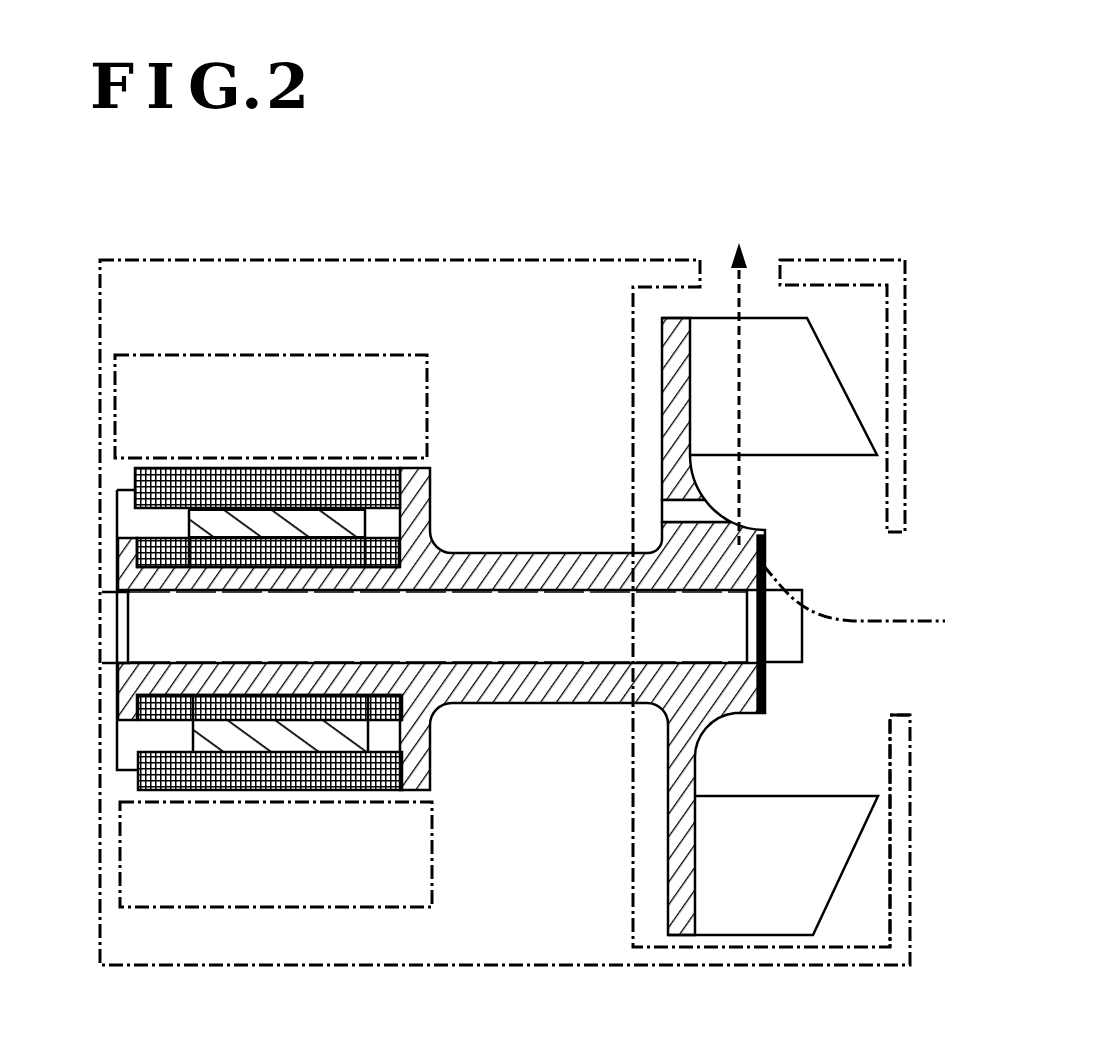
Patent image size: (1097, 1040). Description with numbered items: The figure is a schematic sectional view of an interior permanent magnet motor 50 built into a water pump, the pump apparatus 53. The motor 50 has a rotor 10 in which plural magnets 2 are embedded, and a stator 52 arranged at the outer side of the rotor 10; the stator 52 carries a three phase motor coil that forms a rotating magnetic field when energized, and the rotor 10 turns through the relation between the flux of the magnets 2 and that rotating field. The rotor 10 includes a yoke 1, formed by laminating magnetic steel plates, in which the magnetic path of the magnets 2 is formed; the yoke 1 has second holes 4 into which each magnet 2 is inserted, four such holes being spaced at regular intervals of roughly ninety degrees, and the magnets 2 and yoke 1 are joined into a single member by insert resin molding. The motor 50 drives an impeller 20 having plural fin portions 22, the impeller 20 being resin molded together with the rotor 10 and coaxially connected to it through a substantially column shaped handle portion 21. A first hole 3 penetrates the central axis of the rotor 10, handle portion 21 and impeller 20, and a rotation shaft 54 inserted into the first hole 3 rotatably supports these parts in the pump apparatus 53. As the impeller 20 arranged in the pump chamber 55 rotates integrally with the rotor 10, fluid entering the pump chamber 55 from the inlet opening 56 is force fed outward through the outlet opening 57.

The yoke 1 is at (135, 480).
The magnet 2 is at (185, 520).
The first hole 3 is at (540, 660).
The second hole 4 is at (223, 508).
The rotor 10 is at (445, 462).
The impeller 20 is at (767, 713).
The handle portion 21 is at (565, 553).
The fin portion 22 is at (812, 453).
The motor 50 is at (503, 334).
The stator 52 is at (343, 425).
The pump apparatus 53 is at (247, 262).
The rotation shaft 54 is at (425, 637).
The pump chamber 55 is at (872, 569).
The inlet opening 56 is at (893, 714).
The outlet opening 57 is at (782, 266).